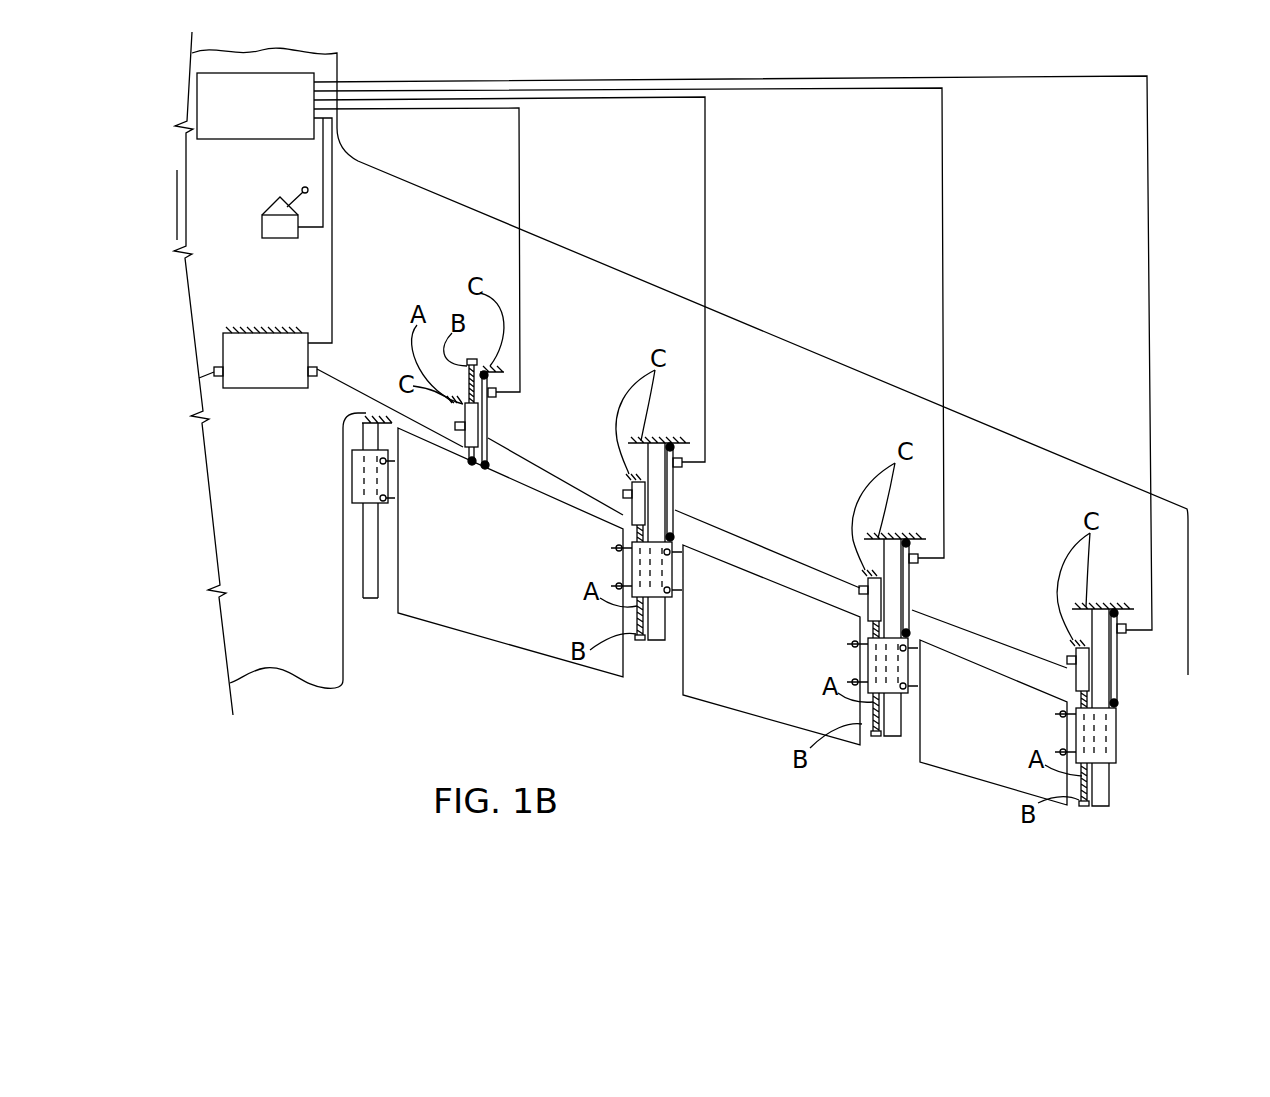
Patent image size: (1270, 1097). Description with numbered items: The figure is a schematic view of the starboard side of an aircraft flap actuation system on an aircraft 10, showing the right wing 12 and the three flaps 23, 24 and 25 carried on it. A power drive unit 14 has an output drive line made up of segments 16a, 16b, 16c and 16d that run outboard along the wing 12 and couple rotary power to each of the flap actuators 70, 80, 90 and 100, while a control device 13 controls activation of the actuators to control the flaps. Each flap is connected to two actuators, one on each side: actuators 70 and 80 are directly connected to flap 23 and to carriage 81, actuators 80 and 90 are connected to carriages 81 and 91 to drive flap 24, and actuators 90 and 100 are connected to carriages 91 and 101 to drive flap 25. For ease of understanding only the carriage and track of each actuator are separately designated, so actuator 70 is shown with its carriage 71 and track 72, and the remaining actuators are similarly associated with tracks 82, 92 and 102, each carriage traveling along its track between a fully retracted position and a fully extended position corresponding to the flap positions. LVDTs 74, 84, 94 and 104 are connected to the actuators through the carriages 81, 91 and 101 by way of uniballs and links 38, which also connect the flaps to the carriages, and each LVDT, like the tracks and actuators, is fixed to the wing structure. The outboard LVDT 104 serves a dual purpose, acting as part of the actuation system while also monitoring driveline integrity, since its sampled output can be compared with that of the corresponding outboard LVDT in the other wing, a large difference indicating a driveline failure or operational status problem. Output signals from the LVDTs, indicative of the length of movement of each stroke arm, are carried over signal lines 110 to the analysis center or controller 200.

The aircraft 10 is at (338, 70).
The right (starboard) wing 12 is at (640, 279).
The control device 13 is at (262, 233).
The power drive unit 14 is at (223, 338).
The drive line segment 16a is at (347, 380).
The drive line segment 16b is at (552, 466).
The drive line segment 16c is at (750, 543).
The drive line segment 16d is at (987, 640).
The flap 23 is at (485, 604).
The flap 24 is at (767, 693).
The flap 25 is at (995, 765).
The uniballs and links 38 is at (395, 498).
The flap actuator 70 is at (456, 415).
The carriage 71 is at (352, 489).
The track 72 is at (363, 598).
The LVDT 74 is at (497, 405).
The flap actuator 80 is at (623, 492).
The carriage 81 is at (660, 598).
The track 82 is at (662, 641).
The LVDT 84 is at (684, 488).
The flap actuator 90 is at (859, 588).
The carriage 91 is at (900, 694).
The track 92 is at (898, 738).
The LVDT 94 is at (918, 583).
The flap actuator 100 is at (1069, 668).
The carriage 101 is at (1121, 742).
The track 102 is at (1109, 789).
The outboard LVDT 104 is at (1121, 662).
The signal lines 110 is at (521, 175).
The controller 200 is at (255, 106).